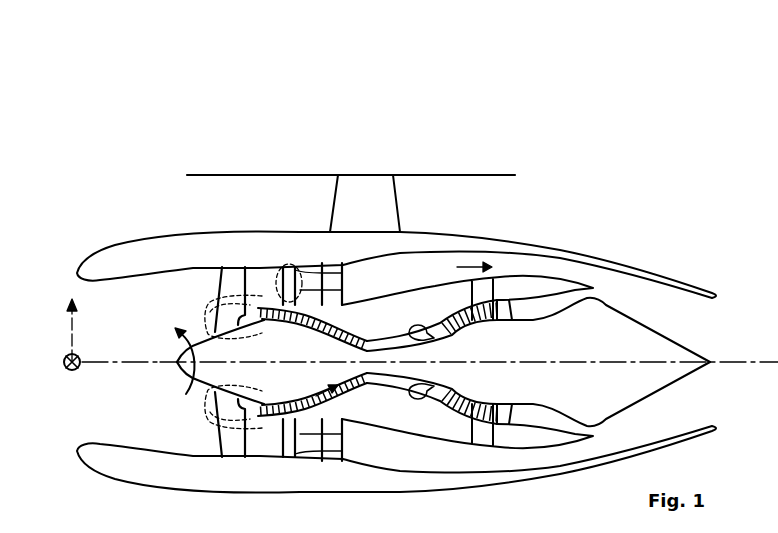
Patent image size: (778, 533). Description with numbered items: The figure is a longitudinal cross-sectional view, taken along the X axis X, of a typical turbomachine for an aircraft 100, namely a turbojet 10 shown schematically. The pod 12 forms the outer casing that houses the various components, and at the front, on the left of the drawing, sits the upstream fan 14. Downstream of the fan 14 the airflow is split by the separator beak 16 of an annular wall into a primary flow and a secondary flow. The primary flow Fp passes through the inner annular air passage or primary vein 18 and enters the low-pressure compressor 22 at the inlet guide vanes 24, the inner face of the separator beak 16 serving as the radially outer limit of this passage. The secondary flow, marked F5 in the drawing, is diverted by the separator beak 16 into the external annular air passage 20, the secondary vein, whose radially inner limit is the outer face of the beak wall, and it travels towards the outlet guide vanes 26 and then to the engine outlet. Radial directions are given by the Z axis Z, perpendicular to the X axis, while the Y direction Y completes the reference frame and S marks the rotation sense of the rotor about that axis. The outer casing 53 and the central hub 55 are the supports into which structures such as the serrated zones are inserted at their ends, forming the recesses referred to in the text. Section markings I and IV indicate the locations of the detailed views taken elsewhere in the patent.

The aircraft 100 is at (245, 174).
The pod 12 is at (303, 231).
The turbojet 10 is at (452, 210).
The outer casing 53 is at (208, 266).
The section IV is at (260, 275).
The external annular air passage 20 is at (278, 275).
The section I is at (307, 287).
The secondary flow F5 is at (478, 262).
The outlet guide vanes 26 is at (345, 275).
The central hub 55 is at (360, 296).
The separator beak 16 is at (235, 297).
The upstream fan 14 is at (232, 306).
The rotation direction S is at (172, 341).
The Z axis Z is at (68, 331).
The Y axis Y is at (63, 368).
The X axis X is at (100, 368).
The inlet guide vanes 24 is at (238, 318).
The primary vein 18 is at (262, 320).
The low-pressure compressor 22 is at (289, 322).
The primary flow Fp is at (318, 402).